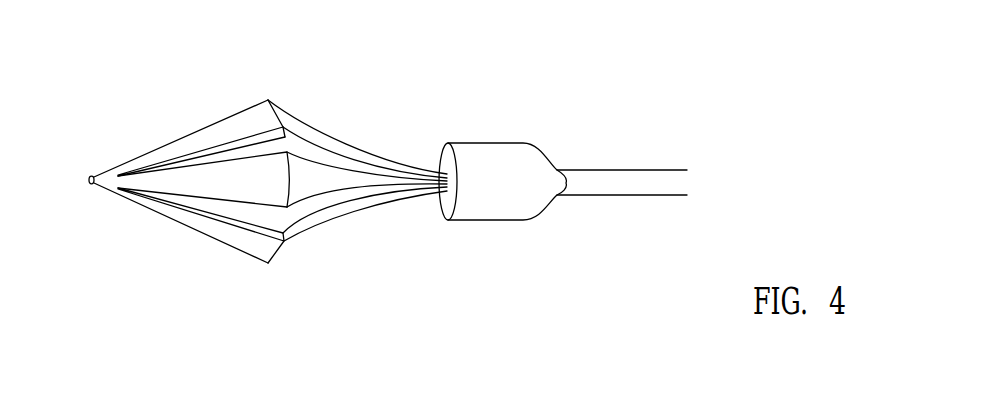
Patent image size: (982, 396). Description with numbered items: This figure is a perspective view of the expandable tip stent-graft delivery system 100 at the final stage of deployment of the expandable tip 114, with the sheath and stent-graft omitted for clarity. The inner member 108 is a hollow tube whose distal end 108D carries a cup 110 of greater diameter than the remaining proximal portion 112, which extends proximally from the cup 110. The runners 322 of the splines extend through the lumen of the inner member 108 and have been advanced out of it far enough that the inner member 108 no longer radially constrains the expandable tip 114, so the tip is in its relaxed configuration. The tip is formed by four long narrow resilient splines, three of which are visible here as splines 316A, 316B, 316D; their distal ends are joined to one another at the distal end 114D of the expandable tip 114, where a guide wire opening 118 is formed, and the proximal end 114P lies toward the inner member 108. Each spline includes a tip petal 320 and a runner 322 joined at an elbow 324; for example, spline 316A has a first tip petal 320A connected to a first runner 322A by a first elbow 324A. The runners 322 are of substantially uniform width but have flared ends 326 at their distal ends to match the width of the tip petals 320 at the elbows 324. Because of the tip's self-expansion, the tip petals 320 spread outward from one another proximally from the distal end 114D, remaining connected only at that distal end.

The expandable tip stent-graft delivery system 100 is at (587, 167).
The inner member 108 is at (622, 190).
The distal end of inner member 108D is at (447, 142).
The cup 110 is at (497, 152).
The proximal portion of inner member 112 is at (610, 180).
The expandable tip 114 is at (235, 171).
The distal end of expandable tip 114D is at (62, 153).
The proximal end of spline assembly 114P is at (272, 98).
The guide wire opening 118 is at (86, 181).
The spline 316A is at (233, 190).
The spline 316B is at (261, 252).
The spline 316D is at (235, 108).
The tip petals 320 is at (199, 100).
The first tip petal 320A is at (208, 192).
The runners 322 is at (282, 196).
The first runner 322A is at (343, 191).
The elbows 324 is at (357, 106).
The first elbow 324A is at (301, 134).
The flared ends 326 is at (270, 260).